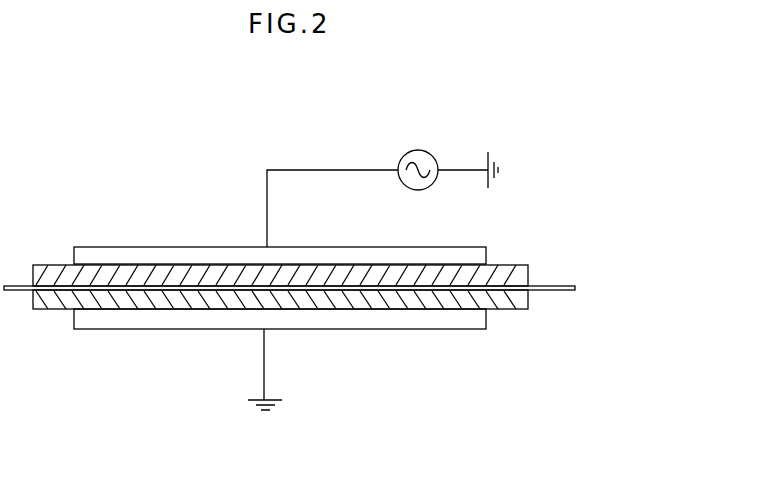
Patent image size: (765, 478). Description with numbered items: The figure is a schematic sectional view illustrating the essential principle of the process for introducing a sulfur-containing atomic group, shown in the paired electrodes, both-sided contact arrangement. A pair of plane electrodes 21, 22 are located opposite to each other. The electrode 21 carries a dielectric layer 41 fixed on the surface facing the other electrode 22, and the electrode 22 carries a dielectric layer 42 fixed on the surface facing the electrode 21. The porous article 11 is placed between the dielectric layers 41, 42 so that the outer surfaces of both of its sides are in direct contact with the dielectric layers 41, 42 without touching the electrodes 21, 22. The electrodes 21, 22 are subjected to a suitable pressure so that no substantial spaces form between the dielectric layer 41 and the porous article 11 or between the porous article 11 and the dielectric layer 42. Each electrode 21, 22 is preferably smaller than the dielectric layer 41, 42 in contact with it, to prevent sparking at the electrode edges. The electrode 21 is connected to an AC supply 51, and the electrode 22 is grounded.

The porous article 11 is at (566, 284).
The electrode 21 is at (163, 247).
The electrode 22 is at (159, 329).
The dielectric layer 41 is at (517, 264).
The dielectric layer 42 is at (512, 310).
The AC supply 51 is at (421, 150).